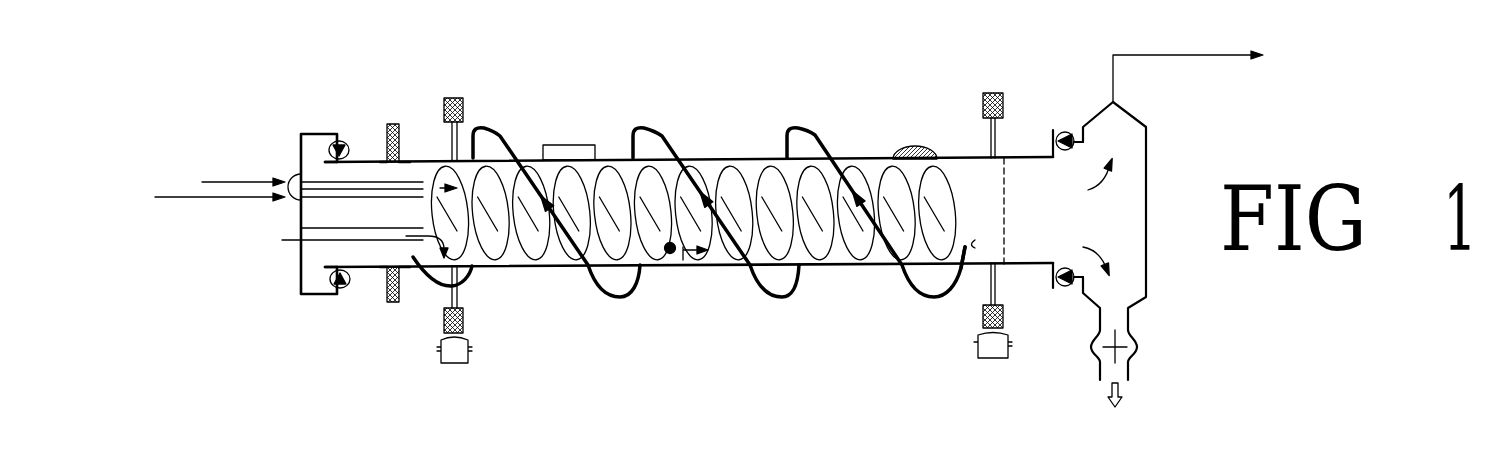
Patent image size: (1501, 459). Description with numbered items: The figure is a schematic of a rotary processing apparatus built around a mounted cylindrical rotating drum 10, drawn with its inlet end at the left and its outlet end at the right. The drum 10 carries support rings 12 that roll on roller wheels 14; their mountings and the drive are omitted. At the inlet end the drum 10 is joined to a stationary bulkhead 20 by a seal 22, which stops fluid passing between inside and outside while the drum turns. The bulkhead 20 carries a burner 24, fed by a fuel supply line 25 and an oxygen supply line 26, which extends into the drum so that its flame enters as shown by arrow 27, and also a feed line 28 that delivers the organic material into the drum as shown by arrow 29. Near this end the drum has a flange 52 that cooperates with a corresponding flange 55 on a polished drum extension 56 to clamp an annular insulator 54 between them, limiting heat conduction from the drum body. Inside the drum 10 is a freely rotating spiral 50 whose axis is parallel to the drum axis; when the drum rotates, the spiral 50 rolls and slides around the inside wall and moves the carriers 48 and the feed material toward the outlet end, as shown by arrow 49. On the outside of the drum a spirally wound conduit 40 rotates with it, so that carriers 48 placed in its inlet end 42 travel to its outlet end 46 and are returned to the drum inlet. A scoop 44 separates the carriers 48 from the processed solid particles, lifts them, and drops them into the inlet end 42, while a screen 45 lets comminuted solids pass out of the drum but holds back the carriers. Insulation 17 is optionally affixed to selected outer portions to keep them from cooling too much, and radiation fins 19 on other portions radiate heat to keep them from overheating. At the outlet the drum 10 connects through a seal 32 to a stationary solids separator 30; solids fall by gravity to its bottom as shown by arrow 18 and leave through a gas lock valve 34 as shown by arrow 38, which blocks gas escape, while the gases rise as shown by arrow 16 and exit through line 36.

The rotating drum 10 is at (488, 268).
The support rings 12 is at (465, 318).
The roller wheels 14 is at (470, 352).
The arrow 16 is at (1088, 190).
The insulation 17 is at (915, 147).
The arrow 18 is at (1093, 243).
The radiation fins 19 is at (558, 145).
The bulkhead 20 is at (300, 140).
The seal 22 is at (333, 146).
The burner 24 is at (292, 178).
The fuel supply line 25 is at (237, 180).
The oxygen supply line 26 is at (192, 197).
The arrow 27 is at (440, 183).
The feed line 28 is at (293, 228).
The arrow 29 is at (433, 228).
The solids separator 30 is at (1150, 150).
The seal 32 is at (1063, 132).
The gas lock valve 34 is at (1131, 340).
The line 36 is at (1190, 58).
The arrow 38 is at (1122, 393).
The spirally wound conduit 40 is at (805, 128).
The inlet end of conduit 42 is at (967, 254).
The scoop 44 is at (975, 240).
The screen 45 is at (1005, 232).
The outlet end of conduit 46 is at (405, 258).
The carriers 48 is at (668, 257).
The arrow 49 is at (687, 268).
The freely rotating spiral 50 is at (763, 157).
The flange 52 is at (406, 133).
The annular insulator 54 is at (390, 123).
The flange 55 is at (383, 125).
The polished drum extension 56 is at (350, 157).